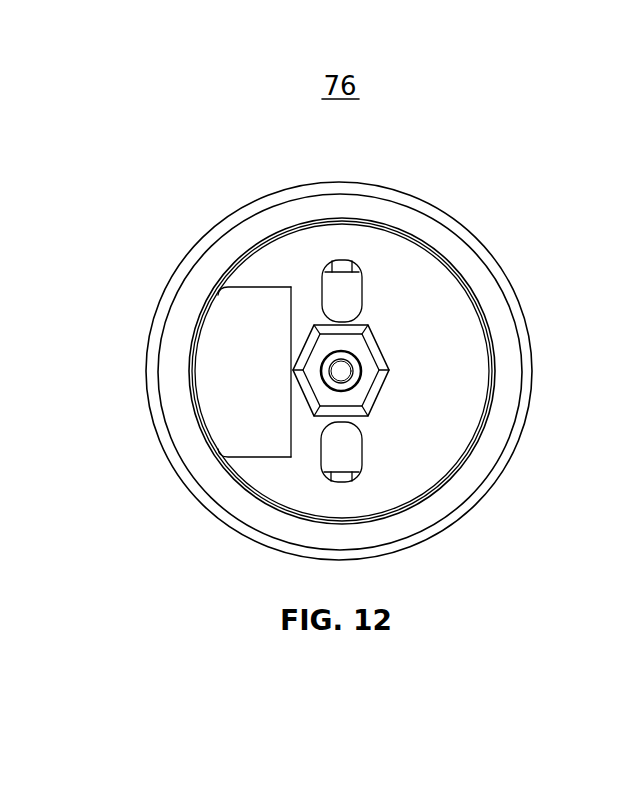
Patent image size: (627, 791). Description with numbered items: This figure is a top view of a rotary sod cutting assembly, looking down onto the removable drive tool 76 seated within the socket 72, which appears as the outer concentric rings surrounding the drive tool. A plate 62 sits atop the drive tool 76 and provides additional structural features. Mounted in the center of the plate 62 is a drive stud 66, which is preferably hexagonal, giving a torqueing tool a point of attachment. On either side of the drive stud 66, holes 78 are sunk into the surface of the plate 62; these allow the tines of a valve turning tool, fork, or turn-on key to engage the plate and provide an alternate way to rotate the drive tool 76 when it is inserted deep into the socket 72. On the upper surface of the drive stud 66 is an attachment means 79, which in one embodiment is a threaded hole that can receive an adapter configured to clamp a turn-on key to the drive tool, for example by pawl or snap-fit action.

The plate 62 is at (275, 488).
The drive stud 66 is at (367, 325).
The socket 72 is at (184, 257).
The removable drive tool 76 is at (192, 413).
The holes 78 is at (362, 280).
The attachment means 79 is at (358, 377).